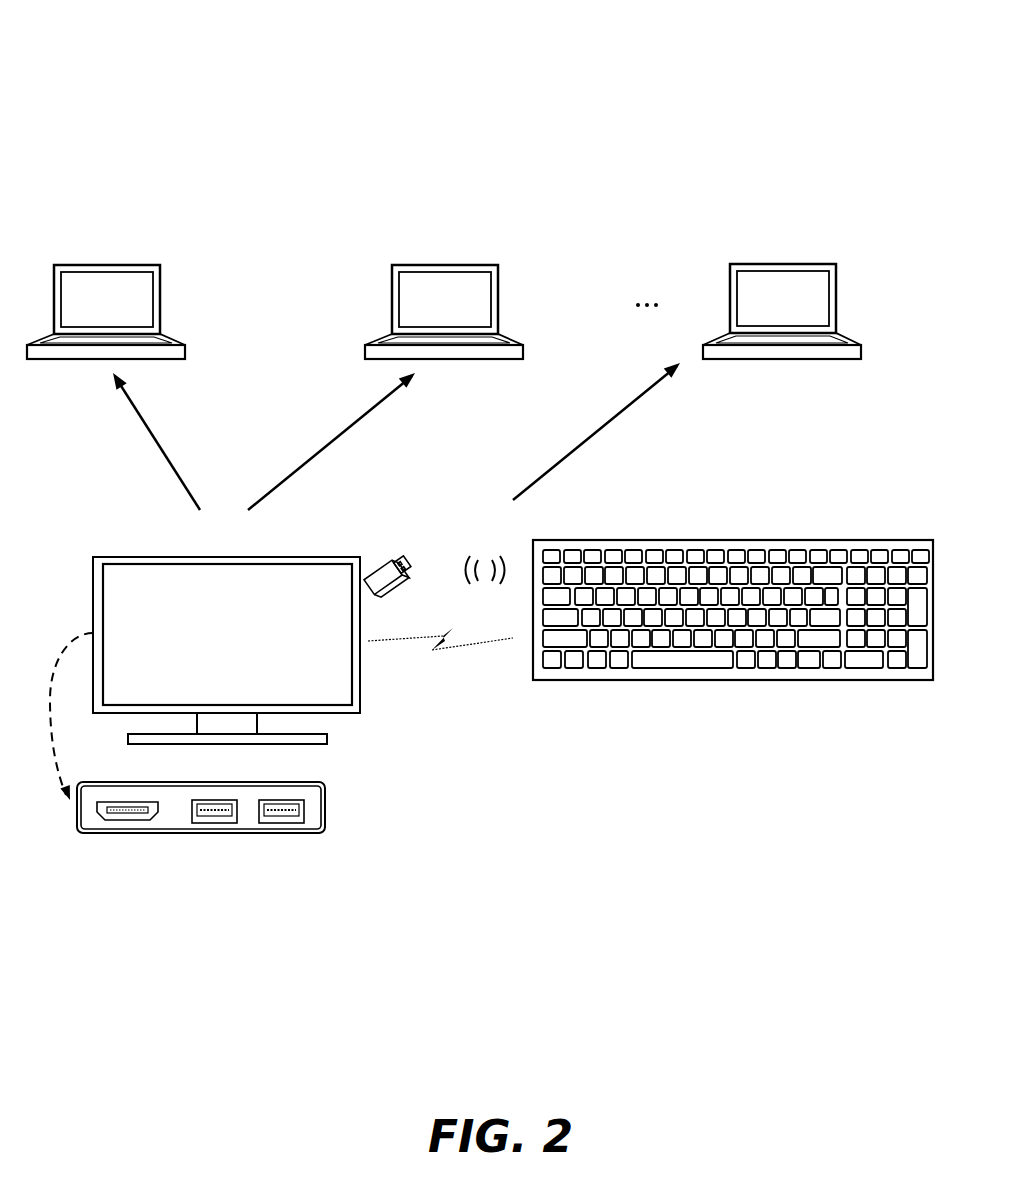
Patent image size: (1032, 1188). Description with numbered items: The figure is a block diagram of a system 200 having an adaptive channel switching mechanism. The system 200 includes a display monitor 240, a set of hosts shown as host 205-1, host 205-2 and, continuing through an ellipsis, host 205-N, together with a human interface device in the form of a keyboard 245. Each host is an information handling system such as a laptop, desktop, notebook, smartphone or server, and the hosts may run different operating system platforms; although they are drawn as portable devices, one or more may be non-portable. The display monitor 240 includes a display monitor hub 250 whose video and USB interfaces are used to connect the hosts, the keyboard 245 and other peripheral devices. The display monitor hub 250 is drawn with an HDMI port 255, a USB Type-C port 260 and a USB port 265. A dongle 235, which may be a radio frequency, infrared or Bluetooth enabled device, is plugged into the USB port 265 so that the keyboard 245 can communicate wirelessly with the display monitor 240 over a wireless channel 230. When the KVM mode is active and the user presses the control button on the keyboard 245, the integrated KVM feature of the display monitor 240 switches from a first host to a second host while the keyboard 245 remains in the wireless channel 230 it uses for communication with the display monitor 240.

The system 200 is at (140, 55).
The host 205-1 is at (160, 307).
The host 205-2 is at (498, 307).
The host 205-N is at (836, 312).
The wireless channel 230 is at (484, 566).
The dongle 235 is at (404, 582).
The display monitor 240 is at (361, 678).
The keyboard 245 is at (799, 681).
The display monitor hub 250 is at (326, 802).
The HDMI port 255 is at (116, 821).
The USB Type-C port 260 is at (210, 823).
The USB port 265 is at (273, 823).